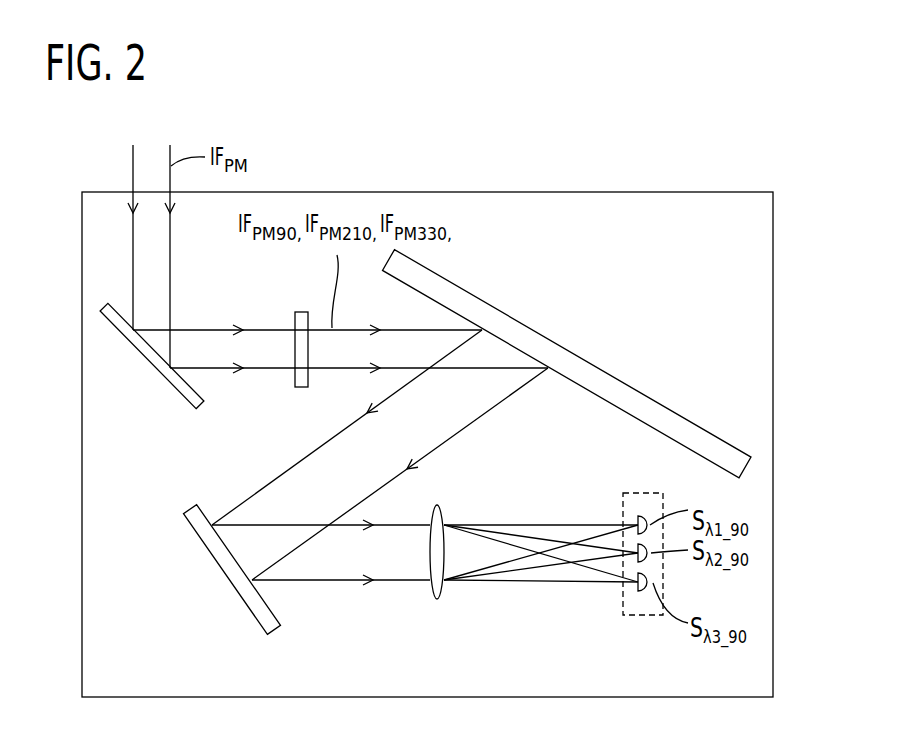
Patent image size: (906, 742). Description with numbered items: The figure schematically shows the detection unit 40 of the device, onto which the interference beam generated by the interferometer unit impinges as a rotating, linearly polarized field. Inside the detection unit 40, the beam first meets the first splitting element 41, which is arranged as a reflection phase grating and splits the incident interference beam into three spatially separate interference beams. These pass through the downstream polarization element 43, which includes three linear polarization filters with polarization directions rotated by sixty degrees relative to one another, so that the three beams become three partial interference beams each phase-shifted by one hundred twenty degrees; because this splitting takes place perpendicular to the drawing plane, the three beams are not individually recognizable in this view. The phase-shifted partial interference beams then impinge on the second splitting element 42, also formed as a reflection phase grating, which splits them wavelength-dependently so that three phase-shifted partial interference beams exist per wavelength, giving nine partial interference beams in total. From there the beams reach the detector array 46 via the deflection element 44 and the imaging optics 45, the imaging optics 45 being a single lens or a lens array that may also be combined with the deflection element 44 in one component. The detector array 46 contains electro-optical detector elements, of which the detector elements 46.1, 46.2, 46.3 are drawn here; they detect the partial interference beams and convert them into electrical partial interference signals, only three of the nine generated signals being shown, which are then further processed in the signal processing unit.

The detection unit 40 is at (660, 192).
The first splitting element 41 is at (159, 378).
The second splitting element 42 is at (600, 368).
The polarization element 43 is at (293, 385).
The deflection element 44 is at (215, 565).
The imaging optics 45 is at (432, 594).
The detector array 46 is at (622, 610).
The detector element 46.1 is at (643, 516).
The detector element 46.2 is at (652, 558).
The detector element 46.3 is at (643, 593).